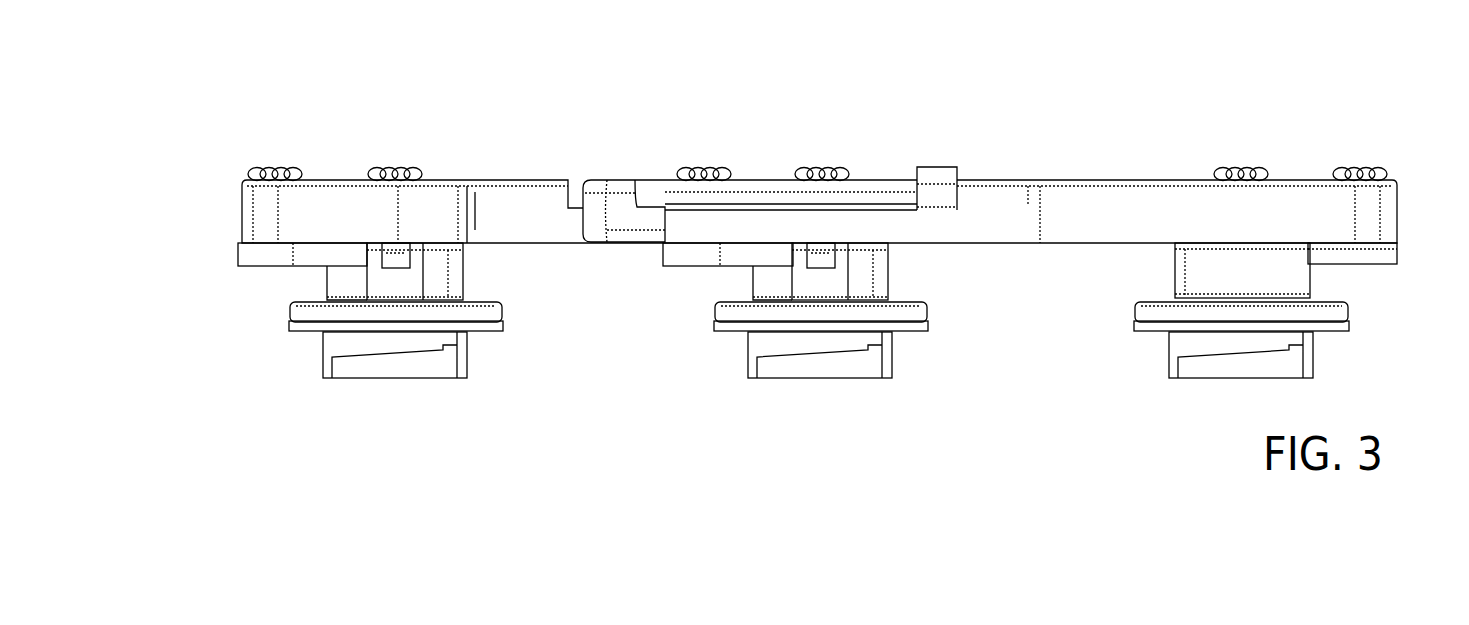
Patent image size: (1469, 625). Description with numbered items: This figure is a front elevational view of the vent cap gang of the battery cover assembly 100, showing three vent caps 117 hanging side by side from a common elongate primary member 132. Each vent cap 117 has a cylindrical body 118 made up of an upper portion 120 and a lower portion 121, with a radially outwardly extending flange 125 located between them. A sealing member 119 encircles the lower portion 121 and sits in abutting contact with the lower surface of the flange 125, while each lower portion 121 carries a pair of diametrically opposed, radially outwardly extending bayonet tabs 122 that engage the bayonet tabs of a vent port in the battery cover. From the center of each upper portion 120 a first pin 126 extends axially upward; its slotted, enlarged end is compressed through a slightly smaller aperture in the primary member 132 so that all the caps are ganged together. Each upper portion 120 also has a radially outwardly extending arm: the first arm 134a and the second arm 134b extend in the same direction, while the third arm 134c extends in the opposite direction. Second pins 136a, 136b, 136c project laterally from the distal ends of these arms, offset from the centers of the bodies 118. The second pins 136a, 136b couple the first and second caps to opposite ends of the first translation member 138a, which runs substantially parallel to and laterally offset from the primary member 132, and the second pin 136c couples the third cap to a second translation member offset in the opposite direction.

The battery cover assembly 100 is at (226, 64).
The vent cap 117 is at (338, 281).
The cylindrical body 118 is at (765, 283).
The sealing member 119 is at (912, 332).
The upper portion 120 is at (455, 282).
The lower portion 121 is at (463, 363).
The bayonet tab 122 is at (833, 362).
The flange 125 is at (292, 318).
The first pin 126 is at (392, 170).
The primary member 132 is at (1013, 212).
The first arm 134a is at (238, 258).
The second arm 134b is at (663, 257).
The third arm 134c is at (1400, 257).
The second pin 136a is at (275, 170).
The second pin 136b is at (700, 170).
The second pin 136c is at (1357, 170).
The first translation member 138a is at (333, 210).